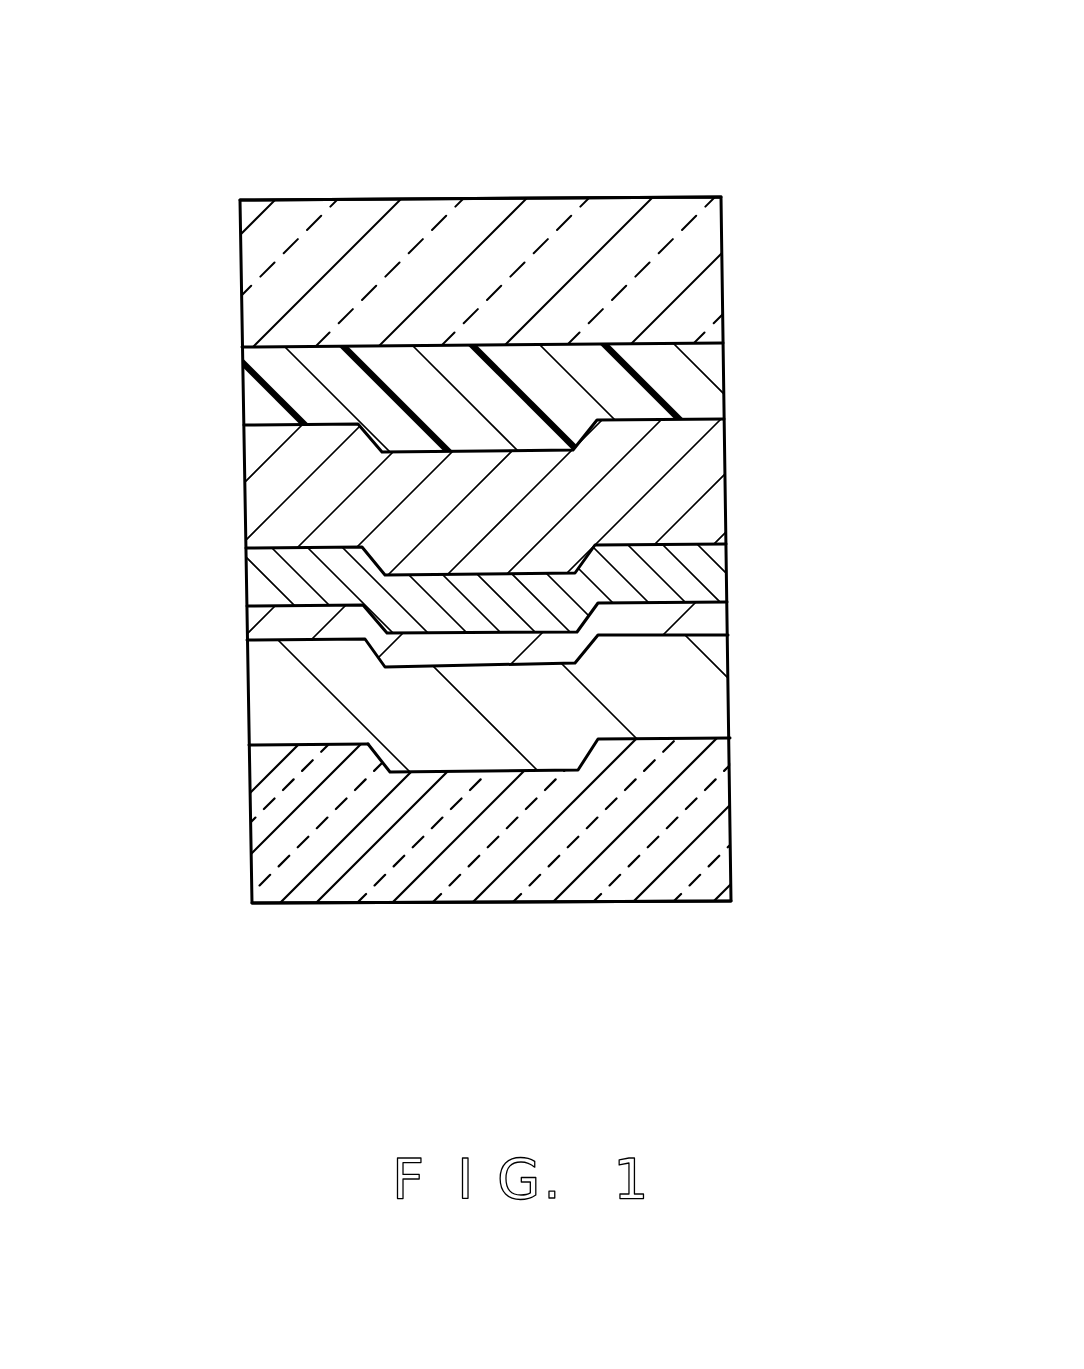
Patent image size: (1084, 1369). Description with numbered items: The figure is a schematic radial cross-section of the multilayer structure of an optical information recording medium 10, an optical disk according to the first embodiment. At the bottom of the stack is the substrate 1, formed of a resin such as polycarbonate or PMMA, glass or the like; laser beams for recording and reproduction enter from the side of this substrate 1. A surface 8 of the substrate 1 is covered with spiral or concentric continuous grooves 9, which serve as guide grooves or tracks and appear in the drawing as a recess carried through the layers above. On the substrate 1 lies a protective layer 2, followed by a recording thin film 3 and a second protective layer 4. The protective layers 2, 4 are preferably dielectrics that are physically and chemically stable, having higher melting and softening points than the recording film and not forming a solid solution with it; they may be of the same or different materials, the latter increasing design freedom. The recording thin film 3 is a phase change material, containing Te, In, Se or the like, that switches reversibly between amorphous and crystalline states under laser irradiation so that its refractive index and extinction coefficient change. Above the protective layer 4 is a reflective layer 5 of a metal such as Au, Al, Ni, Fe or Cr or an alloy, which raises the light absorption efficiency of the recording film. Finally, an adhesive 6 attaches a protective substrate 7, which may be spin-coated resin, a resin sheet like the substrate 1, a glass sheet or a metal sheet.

The substrate 1 is at (720, 817).
The protective layer 2 is at (710, 693).
The recording thin film 3 is at (712, 618).
The protective layer 4 is at (715, 575).
The reflective layer 5 is at (710, 473).
The adhesive 6 is at (710, 370).
The protective substrate 7 is at (710, 244).
The surface of the substrate 8 is at (335, 743).
The grooves 9 is at (483, 773).
The optical information recording medium 10 is at (232, 131).